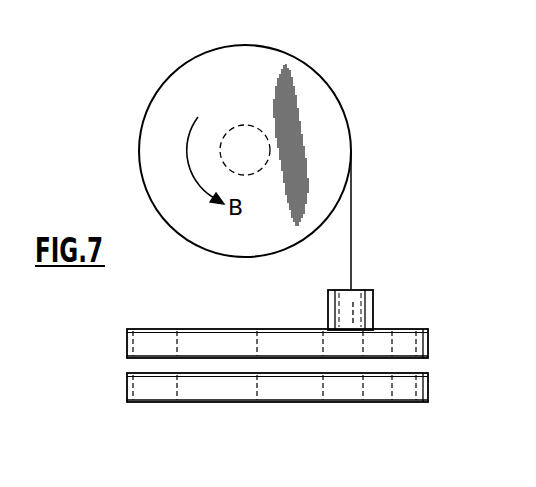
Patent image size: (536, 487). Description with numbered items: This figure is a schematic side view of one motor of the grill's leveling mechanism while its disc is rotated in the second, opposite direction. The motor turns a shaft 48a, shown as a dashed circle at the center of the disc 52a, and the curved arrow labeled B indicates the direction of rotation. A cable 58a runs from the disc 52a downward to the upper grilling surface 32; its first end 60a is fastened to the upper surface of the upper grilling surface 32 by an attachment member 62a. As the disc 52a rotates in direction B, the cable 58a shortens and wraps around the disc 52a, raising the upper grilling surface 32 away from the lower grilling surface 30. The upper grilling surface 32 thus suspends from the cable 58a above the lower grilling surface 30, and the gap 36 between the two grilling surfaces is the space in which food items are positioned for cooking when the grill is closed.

The disc 52a is at (327, 129).
The shaft 48a is at (246, 138).
The cable 58a is at (352, 232).
The first end 60a is at (352, 290).
The attachment member 62a is at (372, 312).
The upper grilling surface 32 is at (425, 347).
The lower grilling surface 30 is at (425, 392).
The gap 36 is at (249, 362).